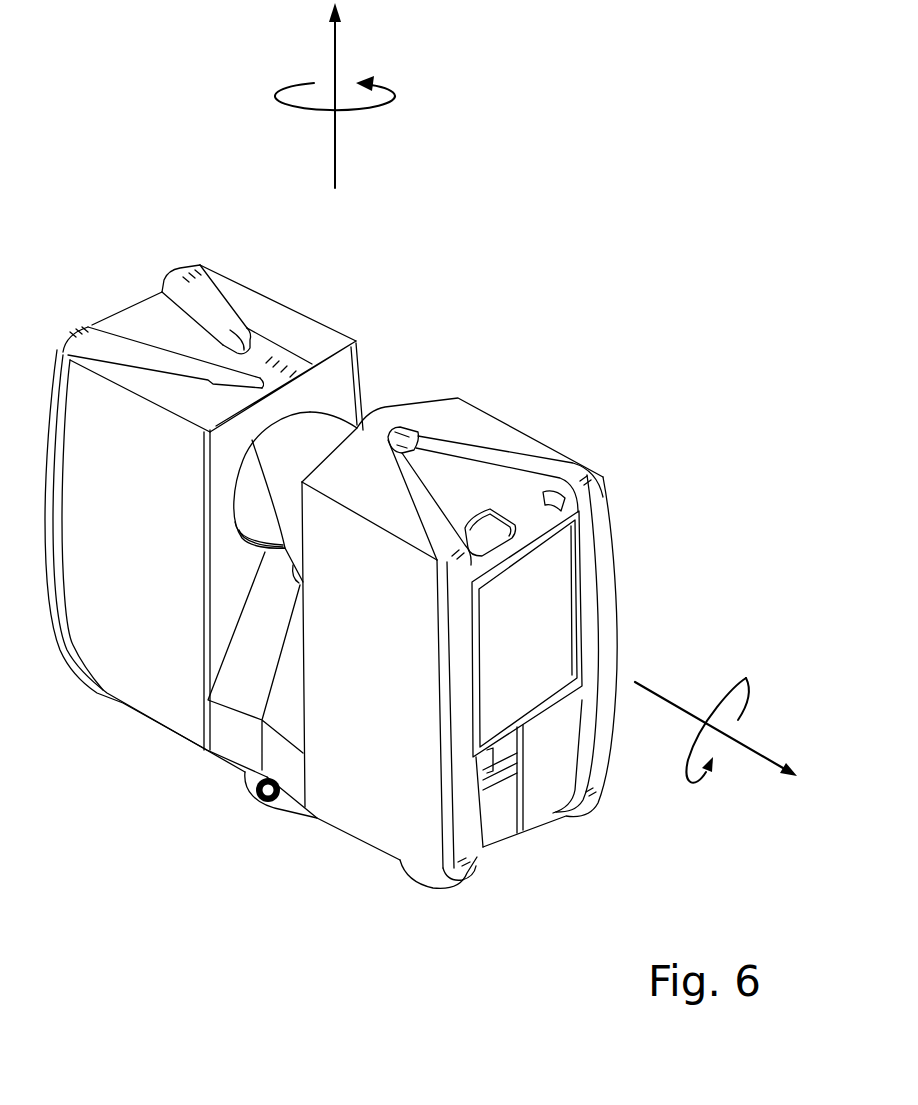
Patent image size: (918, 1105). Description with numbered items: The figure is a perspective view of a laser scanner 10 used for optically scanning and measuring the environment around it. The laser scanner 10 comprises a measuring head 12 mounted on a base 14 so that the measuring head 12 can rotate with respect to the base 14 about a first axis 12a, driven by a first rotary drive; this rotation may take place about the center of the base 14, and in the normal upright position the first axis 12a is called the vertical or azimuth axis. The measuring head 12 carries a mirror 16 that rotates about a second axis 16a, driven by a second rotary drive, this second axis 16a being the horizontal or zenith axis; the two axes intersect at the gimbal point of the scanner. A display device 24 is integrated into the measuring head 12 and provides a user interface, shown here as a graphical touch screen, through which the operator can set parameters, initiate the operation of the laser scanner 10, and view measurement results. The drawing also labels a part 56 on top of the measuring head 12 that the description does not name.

The laser scanner 10 is at (384, 478).
The measuring head 12 is at (384, 570).
The first axis 12a is at (336, 62).
The base 14 is at (277, 807).
The mirror 16 is at (463, 643).
The second axis 16a is at (768, 752).
The display device 24 is at (550, 575).
The handle 56 is at (108, 340).